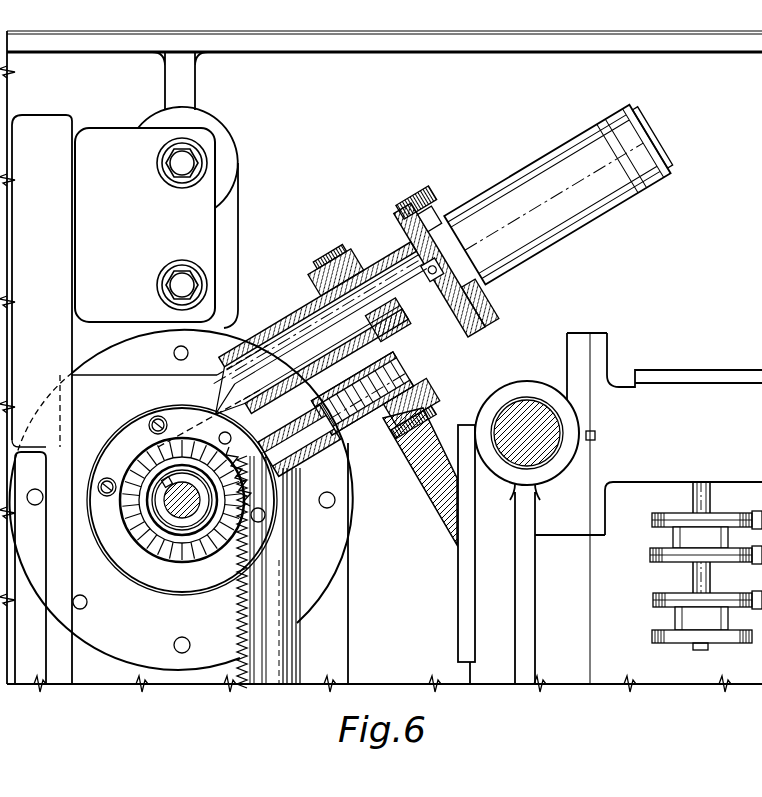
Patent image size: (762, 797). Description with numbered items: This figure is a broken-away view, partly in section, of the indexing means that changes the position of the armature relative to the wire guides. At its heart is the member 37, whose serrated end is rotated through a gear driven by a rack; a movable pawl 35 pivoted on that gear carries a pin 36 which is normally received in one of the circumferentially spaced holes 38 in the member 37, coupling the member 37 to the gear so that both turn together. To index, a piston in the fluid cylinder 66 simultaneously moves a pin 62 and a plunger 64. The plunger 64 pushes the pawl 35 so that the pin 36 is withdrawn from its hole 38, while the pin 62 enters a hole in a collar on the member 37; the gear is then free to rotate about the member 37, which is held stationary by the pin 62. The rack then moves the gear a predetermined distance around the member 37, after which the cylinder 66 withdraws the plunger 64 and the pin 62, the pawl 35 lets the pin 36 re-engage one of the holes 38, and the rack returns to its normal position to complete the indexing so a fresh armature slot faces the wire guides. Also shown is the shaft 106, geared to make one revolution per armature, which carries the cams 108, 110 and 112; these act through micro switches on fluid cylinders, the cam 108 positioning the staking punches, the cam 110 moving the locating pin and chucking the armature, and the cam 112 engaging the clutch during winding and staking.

The movable pawl 35 is at (150, 432).
The pin 36 is at (143, 458).
The member 37 is at (207, 543).
The circumferentially spaced holes 38 is at (130, 532).
The pin 62 is at (268, 462).
The plunger 64 is at (298, 342).
The fluid cylinder 66 is at (560, 232).
The shaft 106 is at (713, 499).
The cam 108 is at (662, 513).
The cam 110 is at (668, 550).
The cam 112 is at (655, 598).